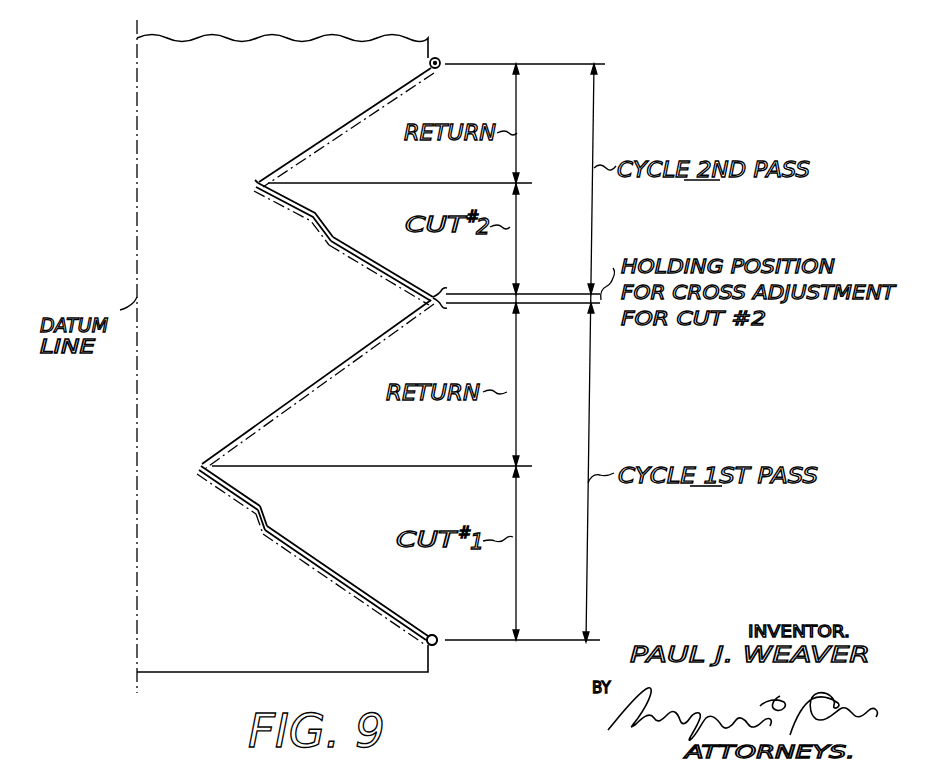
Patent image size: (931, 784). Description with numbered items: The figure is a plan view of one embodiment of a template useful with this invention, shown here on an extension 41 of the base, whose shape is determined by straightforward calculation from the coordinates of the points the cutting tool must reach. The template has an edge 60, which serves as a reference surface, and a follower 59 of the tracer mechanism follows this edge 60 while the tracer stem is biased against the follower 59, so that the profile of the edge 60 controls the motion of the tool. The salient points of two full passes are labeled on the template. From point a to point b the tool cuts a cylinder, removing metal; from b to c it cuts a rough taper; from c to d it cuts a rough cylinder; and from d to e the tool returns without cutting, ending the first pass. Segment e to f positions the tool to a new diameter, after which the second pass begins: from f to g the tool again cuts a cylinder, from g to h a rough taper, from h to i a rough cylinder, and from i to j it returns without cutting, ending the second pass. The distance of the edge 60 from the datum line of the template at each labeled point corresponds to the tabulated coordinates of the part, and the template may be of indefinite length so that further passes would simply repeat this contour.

The extension 41 is at (390, 673).
The follower 59 is at (437, 634).
The edge of the template 60 is at (372, 600).
The point a is at (436, 645).
The point b is at (270, 526).
The point c is at (262, 505).
The point d is at (203, 469).
The point e is at (440, 305).
The point f is at (440, 290).
The point g is at (332, 240).
The point h is at (317, 212).
The point i is at (257, 187).
The point j is at (440, 67).